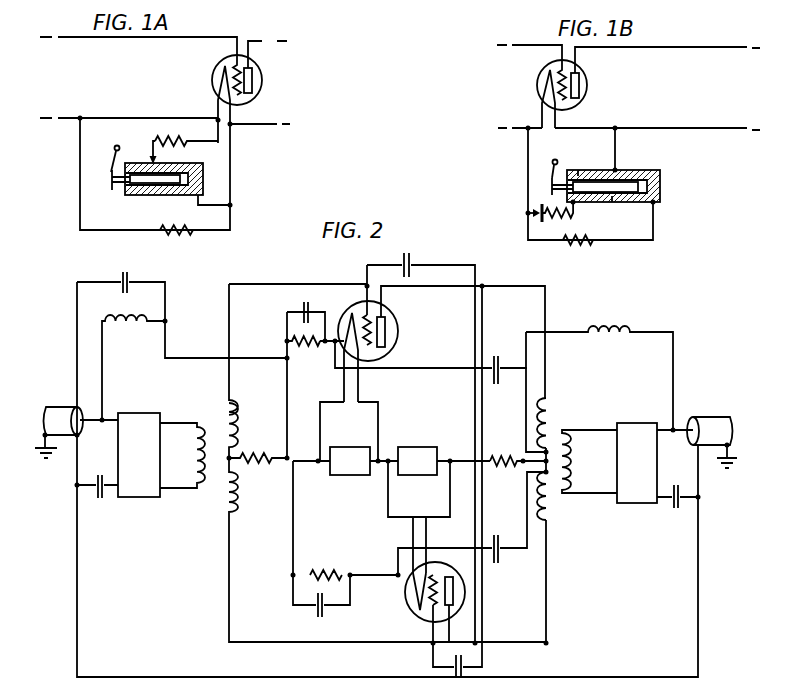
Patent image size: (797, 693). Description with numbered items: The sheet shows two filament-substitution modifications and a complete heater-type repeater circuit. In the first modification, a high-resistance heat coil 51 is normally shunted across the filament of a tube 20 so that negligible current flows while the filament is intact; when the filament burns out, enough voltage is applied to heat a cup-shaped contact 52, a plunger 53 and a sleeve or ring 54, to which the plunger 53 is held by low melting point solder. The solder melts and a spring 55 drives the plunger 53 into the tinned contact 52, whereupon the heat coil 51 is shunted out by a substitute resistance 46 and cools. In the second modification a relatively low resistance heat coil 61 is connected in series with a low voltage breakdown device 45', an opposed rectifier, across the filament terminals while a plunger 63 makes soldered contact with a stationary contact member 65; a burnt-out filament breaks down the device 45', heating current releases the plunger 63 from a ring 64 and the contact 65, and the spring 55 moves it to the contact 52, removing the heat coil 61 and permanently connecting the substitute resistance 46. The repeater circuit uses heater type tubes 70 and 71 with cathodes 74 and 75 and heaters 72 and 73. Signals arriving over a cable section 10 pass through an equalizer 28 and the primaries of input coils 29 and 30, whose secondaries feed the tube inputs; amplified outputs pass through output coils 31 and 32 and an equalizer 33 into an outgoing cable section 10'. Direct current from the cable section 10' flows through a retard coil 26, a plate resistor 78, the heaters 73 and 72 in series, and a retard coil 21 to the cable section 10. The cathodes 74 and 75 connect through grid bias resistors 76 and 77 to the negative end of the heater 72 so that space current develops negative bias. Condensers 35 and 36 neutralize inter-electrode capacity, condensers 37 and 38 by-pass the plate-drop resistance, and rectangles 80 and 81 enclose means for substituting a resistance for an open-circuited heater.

In FIG. 2, the cable section 10 is at (59, 420).
In FIG. 2, the cable section 10' is at (712, 428).
In FIG. 1A, the space discharge device 20 is at (262, 78).
In FIG. 1B, the space discharge device 20 is at (538, 90).
In FIG. 2, the retard coil 21 is at (121, 279).
In FIG. 2, the retard coil 26 is at (616, 338).
In FIG. 2, the equalizer 28 is at (143, 493).
In FIG. 2, the input coil 29 is at (222, 410).
In FIG. 2, the input coil 30 is at (214, 495).
In FIG. 2, the output coil 31 is at (556, 424).
In FIG. 2, the output coil 32 is at (556, 498).
In FIG. 2, the equalizer 33 is at (636, 503).
In FIG. 2, the condenser 35 is at (411, 261).
In FIG. 2, the condenser 36 is at (452, 674).
In FIG. 2, the by-pass condenser 37 is at (498, 357).
In FIG. 2, the by-pass condenser 38 is at (499, 566).
In FIG. 1B, the low voltage breakdown device 45' is at (518, 202).
In FIG. 1A, the substitute resistance 46 is at (184, 149).
In FIG. 1B, the substitute resistance 46 is at (594, 246).
In FIG. 1A, the heat coil 51 is at (189, 216).
In FIG. 1A, the cup-shaped contact 52 is at (204, 182).
In FIG. 1B, the cup-shaped contact 52 is at (663, 194).
In FIG. 1A, the plunger 53 is at (158, 187).
In FIG. 1A, the sleeve or ring 54 is at (151, 158).
In FIG. 1A, the spring 55 is at (110, 181).
In FIG. 1B, the spring 55 is at (546, 176).
In FIG. 1B, the heat coil 61 is at (560, 219).
In FIG. 1B, the plunger 63 is at (632, 182).
In FIG. 1B, the ring 64 is at (614, 203).
In FIG. 1B, the stationary contact member 65 is at (578, 171).
In FIG. 2, the tube 70 is at (398, 333).
In FIG. 2, the tube 71 is at (410, 601).
In FIG. 2, the heater 72 is at (366, 285).
In FIG. 2, the heater 73 is at (410, 585).
In FIG. 2, the cathode 74 is at (345, 323).
In FIG. 2, the cathode 75 is at (419, 611).
In FIG. 2, the grid bias resistor 76 is at (312, 348).
In FIG. 2, the grid bias resistor 77 is at (333, 557).
In FIG. 2, the plate resistor 78 is at (501, 468).
In FIG. 2, the substitution resistance mechanism 80 is at (358, 476).
In FIG. 2, the substitution resistance mechanism 81 is at (428, 476).